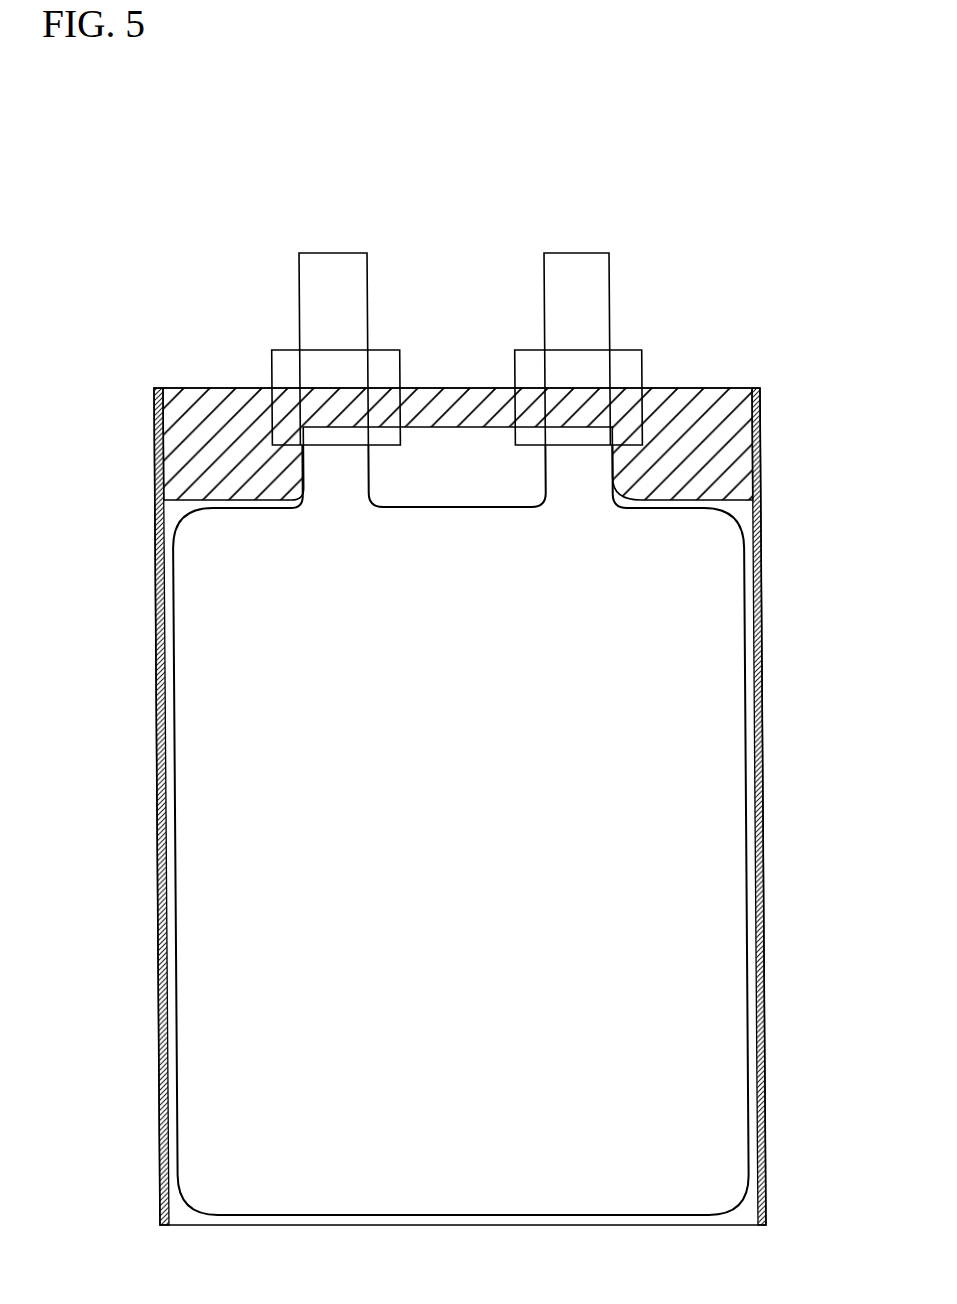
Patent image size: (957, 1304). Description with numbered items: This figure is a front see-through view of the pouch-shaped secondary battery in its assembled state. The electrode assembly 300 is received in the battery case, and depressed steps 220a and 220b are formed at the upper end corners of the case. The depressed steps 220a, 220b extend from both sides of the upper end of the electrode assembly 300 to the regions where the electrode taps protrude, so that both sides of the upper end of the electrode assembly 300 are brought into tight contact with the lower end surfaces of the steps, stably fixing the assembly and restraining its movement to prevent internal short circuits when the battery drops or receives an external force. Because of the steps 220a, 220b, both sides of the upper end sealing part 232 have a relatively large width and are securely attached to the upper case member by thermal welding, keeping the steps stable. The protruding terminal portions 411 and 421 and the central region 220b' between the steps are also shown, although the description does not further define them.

The electrode assembly 300 is at (713, 938).
The upper end sealing part 232 is at (203, 412).
The first electrode terminal 411 is at (348, 253).
The second electrode terminal 421 is at (577, 253).
The depressed step 220a is at (228, 508).
The depressed step 220b is at (678, 550).
The intermediate accommodating portion 220b' is at (425, 509).